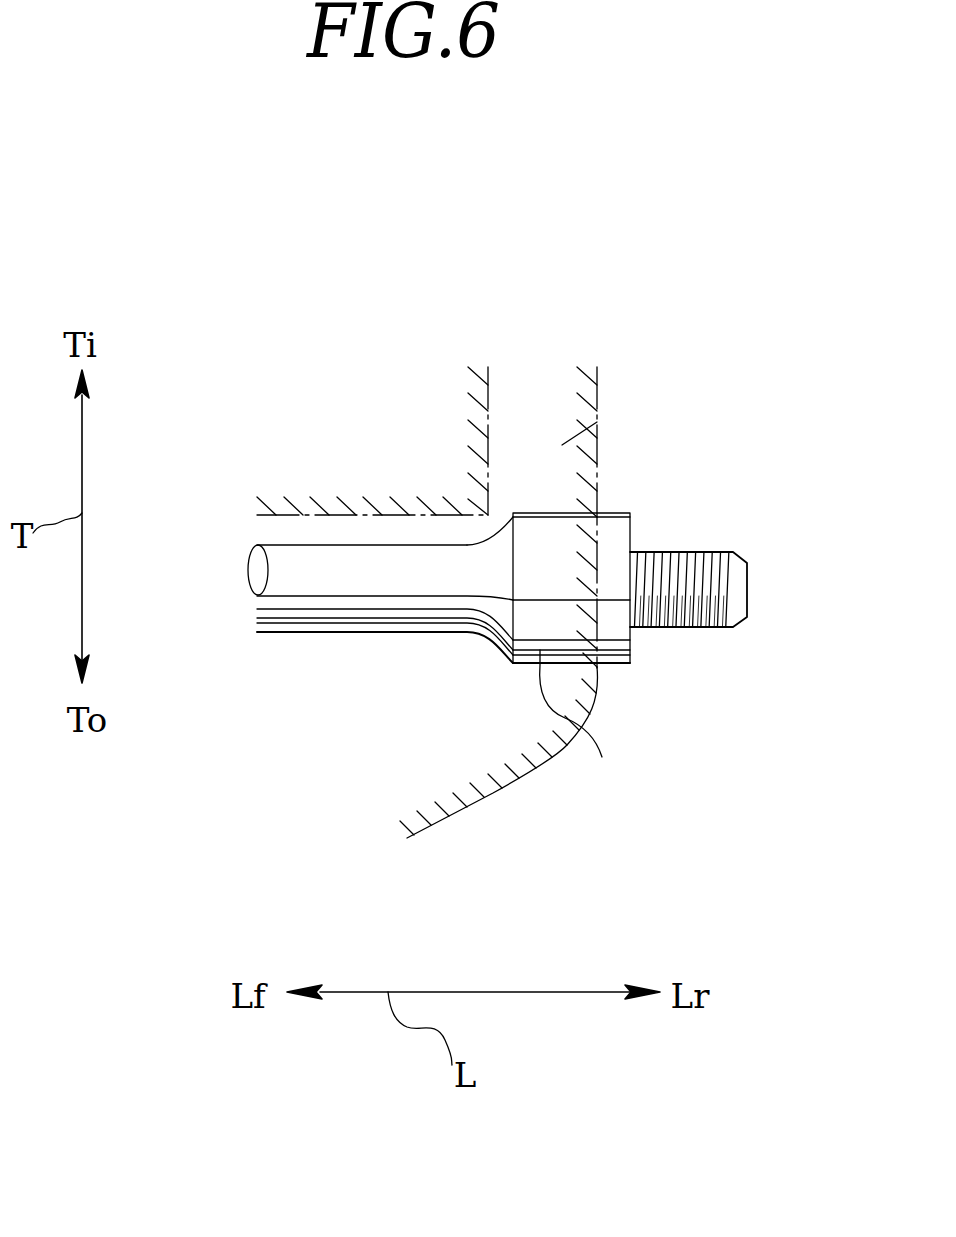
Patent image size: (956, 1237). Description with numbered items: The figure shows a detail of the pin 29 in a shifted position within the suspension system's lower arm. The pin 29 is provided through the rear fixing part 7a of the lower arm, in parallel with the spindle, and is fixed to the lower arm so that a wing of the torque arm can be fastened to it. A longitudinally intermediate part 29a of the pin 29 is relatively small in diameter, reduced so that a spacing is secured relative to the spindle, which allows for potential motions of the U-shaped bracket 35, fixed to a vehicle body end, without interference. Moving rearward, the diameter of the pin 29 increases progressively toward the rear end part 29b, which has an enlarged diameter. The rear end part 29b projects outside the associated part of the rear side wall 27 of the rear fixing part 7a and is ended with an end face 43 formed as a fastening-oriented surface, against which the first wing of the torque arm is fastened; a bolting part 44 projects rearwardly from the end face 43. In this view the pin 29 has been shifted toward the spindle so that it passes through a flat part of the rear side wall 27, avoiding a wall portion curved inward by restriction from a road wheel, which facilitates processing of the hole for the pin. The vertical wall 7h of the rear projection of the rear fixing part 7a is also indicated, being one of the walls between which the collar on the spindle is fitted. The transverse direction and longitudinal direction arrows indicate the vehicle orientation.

The U-shaped bracket 35 is at (488, 420).
The rear fixing part 7a is at (597, 421).
The vertical wall 7h is at (597, 460).
The rear side wall 27 is at (597, 485).
The pin 29 is at (415, 637).
The longitudinally intermediate part 29a is at (332, 596).
The rear end part 29b is at (602, 757).
The end face 43 is at (632, 647).
The bolting part 44 is at (748, 590).